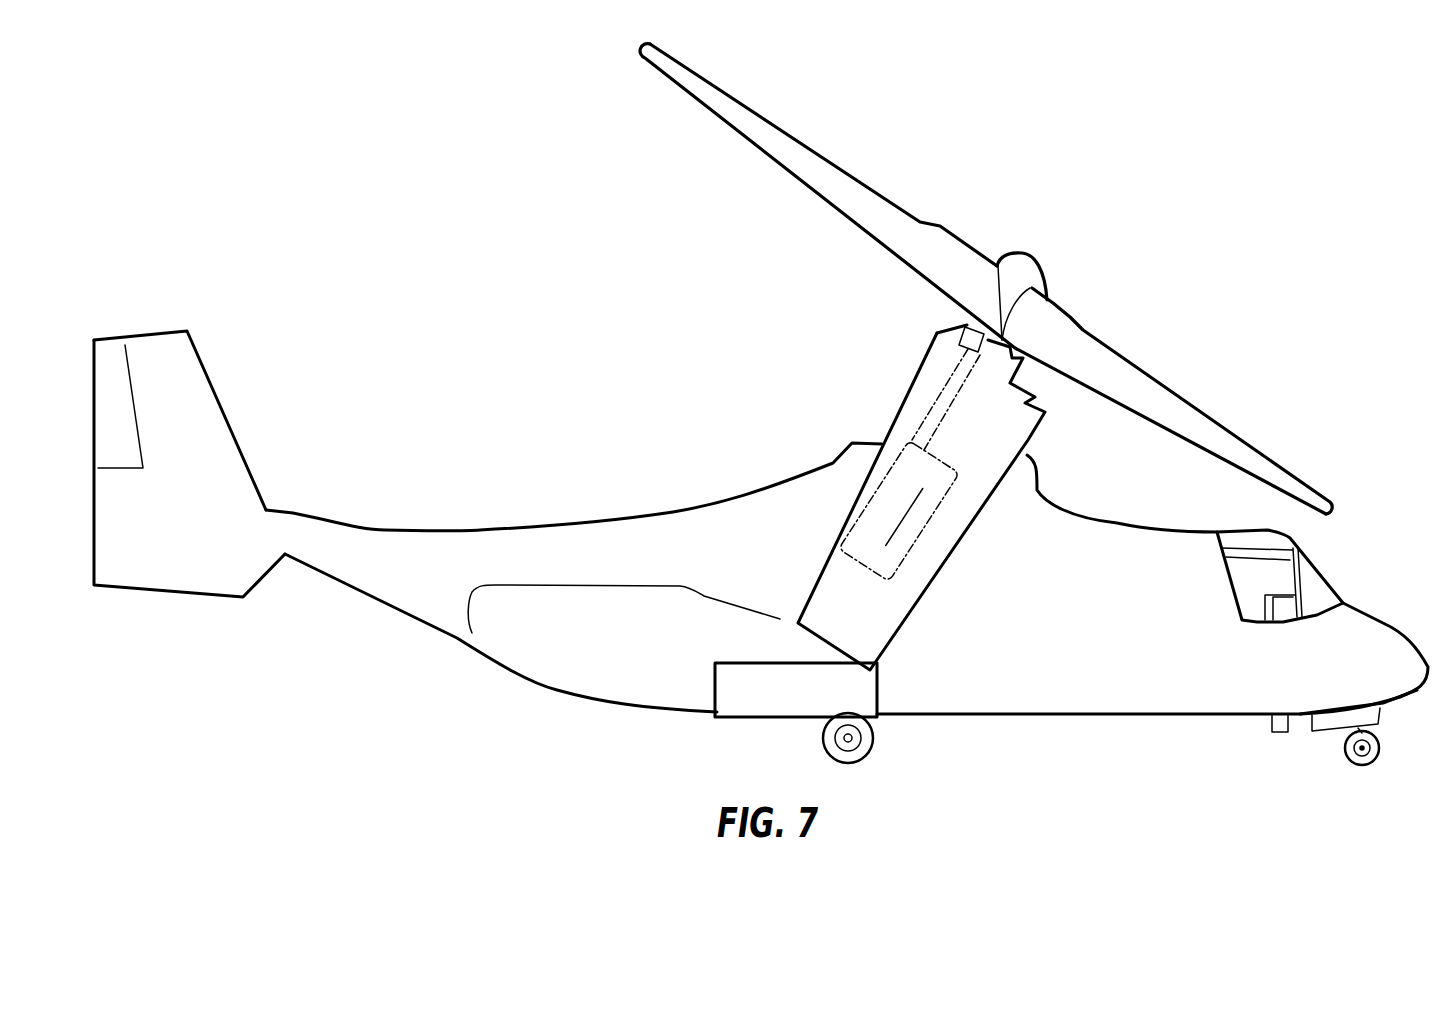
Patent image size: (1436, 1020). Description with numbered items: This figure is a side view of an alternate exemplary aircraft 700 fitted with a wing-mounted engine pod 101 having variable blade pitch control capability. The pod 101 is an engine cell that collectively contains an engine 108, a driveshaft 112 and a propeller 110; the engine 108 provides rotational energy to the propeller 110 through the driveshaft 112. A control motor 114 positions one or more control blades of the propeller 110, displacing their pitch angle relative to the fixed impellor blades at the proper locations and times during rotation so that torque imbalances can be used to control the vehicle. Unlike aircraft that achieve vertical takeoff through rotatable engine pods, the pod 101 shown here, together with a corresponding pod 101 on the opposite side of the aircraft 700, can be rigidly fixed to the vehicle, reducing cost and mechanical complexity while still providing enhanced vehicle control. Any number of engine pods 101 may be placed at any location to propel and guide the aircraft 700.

The aircraft 700 is at (1283, 337).
The engine pod 101 is at (900, 636).
The engine 108 is at (868, 483).
The propeller 110 is at (1048, 266).
The driveshaft 112 is at (957, 390).
The control motor 114 is at (965, 330).